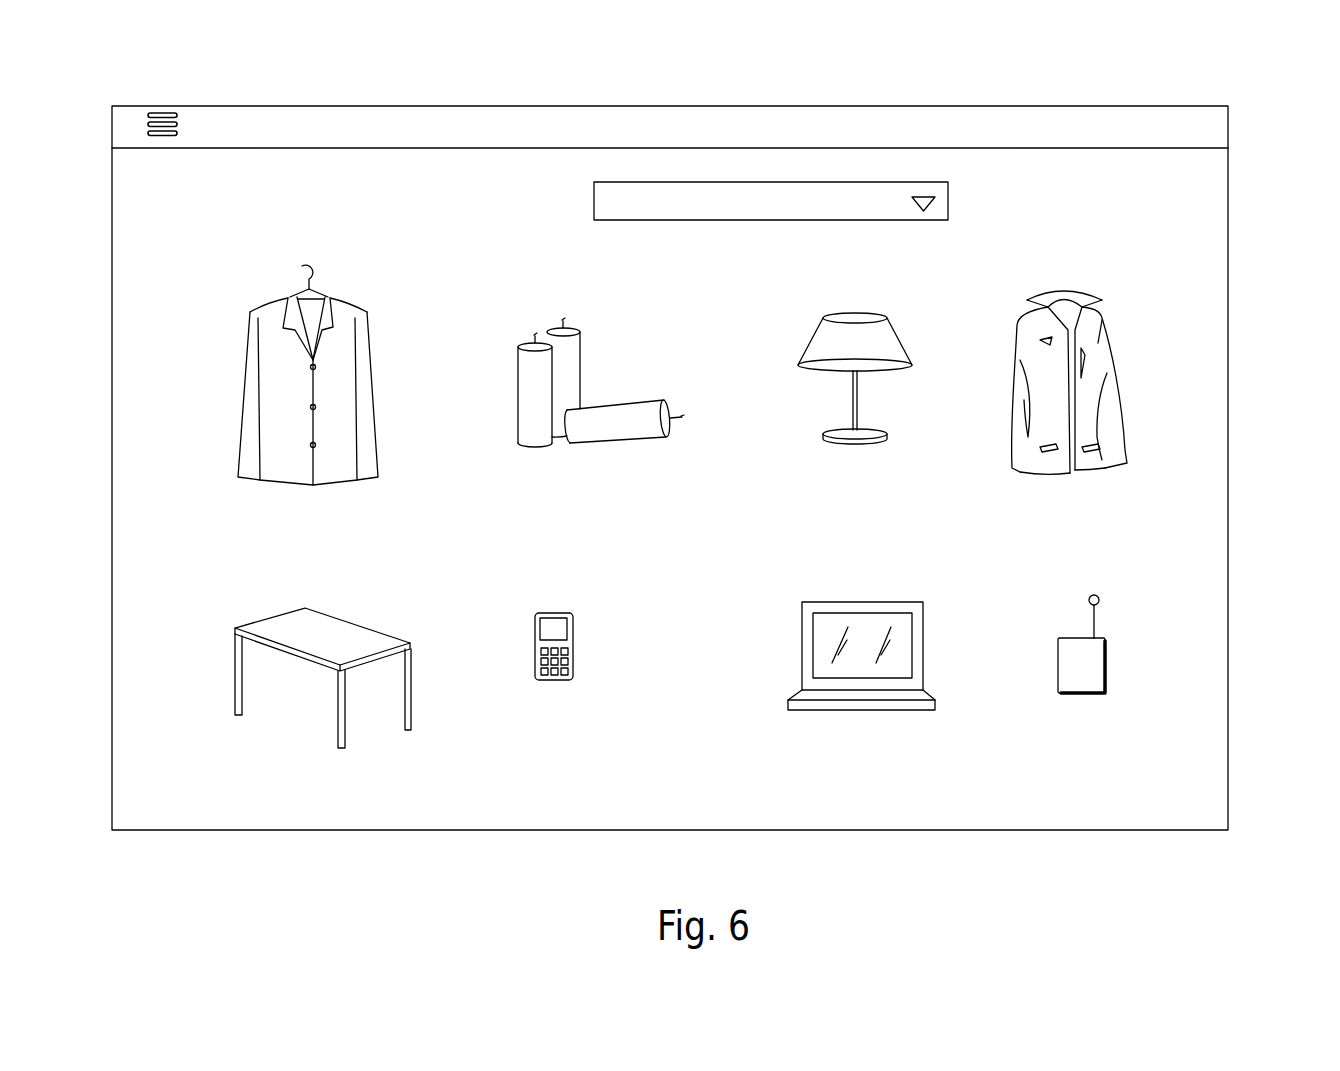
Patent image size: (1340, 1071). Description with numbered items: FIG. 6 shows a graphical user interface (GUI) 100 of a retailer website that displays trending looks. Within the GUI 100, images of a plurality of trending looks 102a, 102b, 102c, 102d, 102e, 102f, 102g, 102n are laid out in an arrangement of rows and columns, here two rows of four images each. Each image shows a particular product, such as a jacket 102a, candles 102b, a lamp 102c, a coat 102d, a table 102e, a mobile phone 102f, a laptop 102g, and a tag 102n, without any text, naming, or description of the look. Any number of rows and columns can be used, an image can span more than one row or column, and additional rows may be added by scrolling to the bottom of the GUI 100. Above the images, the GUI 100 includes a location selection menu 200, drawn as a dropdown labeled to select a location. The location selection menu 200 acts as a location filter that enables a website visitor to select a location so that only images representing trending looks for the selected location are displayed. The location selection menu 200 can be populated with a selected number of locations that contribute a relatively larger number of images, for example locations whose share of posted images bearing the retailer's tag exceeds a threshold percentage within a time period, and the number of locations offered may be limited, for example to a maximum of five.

The graphical user interface 100 is at (1186, 88).
The location selection menu 200 is at (980, 196).
The image of trending look 102a is at (225, 346).
The image of trending look 102b is at (532, 309).
The image of trending look 102c is at (851, 289).
The image of trending look 102d is at (1126, 302).
The image of trending look 102e is at (254, 600).
The image of trending look 102f is at (586, 596).
The image of trending look 102g is at (848, 578).
The image of trending look 102n is at (1058, 599).